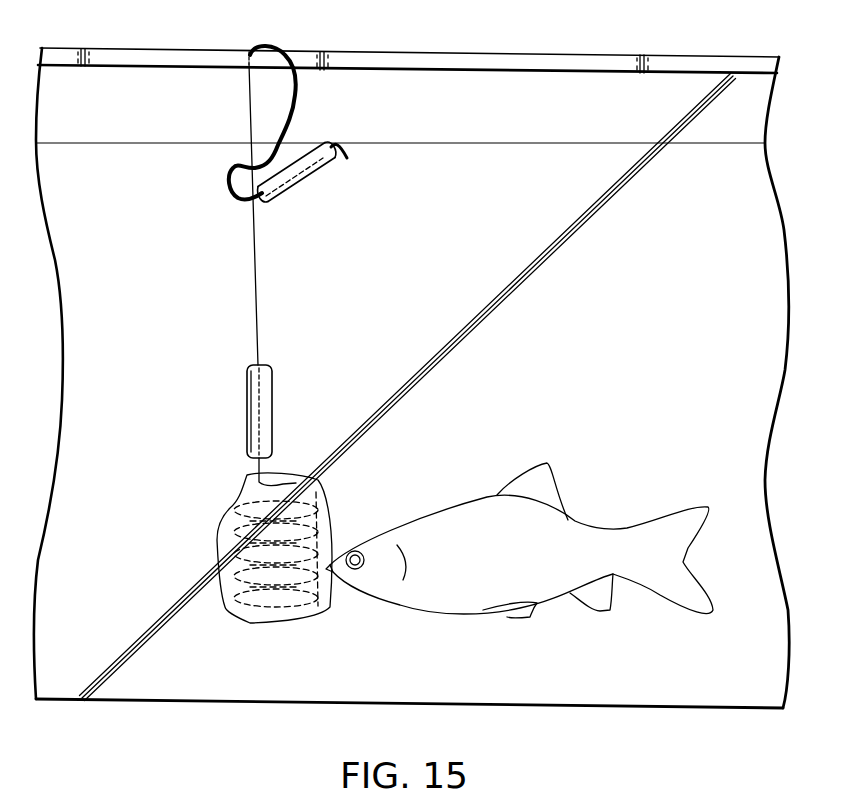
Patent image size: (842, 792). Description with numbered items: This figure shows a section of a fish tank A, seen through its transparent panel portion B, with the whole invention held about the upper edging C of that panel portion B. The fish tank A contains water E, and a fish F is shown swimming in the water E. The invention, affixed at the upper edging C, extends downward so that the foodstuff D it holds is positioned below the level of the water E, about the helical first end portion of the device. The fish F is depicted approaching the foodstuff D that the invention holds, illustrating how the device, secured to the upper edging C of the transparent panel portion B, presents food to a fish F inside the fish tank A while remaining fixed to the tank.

The fish tank A is at (370, 50).
The transparent panel portion B is at (200, 95).
The upper edging C is at (153, 57).
The foodstuff D is at (222, 525).
The water E is at (425, 140).
The fish F is at (458, 517).